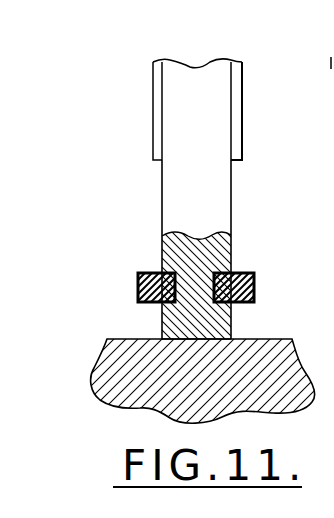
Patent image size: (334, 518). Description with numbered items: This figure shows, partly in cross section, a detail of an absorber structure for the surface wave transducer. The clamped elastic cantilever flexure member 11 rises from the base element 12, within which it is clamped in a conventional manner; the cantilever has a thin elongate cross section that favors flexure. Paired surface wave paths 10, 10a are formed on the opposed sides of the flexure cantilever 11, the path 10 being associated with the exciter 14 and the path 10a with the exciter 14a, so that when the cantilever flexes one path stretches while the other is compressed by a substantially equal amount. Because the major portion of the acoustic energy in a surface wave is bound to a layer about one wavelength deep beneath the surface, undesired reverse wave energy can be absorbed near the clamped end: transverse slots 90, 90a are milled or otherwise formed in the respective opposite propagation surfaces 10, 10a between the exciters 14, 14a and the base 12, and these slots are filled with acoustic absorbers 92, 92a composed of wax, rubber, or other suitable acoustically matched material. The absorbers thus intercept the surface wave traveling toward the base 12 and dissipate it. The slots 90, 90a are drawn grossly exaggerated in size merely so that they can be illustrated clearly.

The cantilever flexure member 11 is at (193, 72).
The exciter 14 is at (238, 115).
The exciter 14a is at (157, 115).
The surface wave path 10 is at (233, 172).
The surface wave path 10a is at (162, 168).
The transverse slot 90 is at (210, 278).
The transverse slot 90a is at (185, 292).
The acoustic absorber 92 is at (253, 292).
The acoustic absorber 92a is at (138, 290).
The base element 12 is at (275, 338).